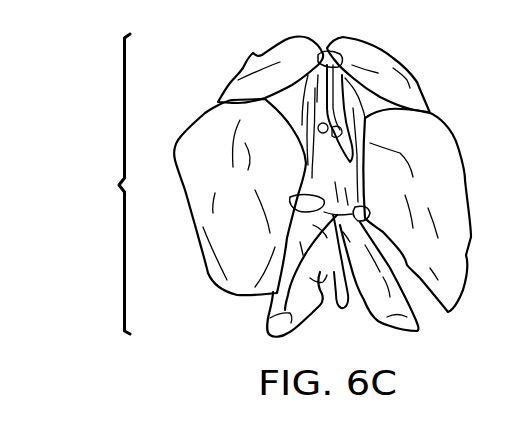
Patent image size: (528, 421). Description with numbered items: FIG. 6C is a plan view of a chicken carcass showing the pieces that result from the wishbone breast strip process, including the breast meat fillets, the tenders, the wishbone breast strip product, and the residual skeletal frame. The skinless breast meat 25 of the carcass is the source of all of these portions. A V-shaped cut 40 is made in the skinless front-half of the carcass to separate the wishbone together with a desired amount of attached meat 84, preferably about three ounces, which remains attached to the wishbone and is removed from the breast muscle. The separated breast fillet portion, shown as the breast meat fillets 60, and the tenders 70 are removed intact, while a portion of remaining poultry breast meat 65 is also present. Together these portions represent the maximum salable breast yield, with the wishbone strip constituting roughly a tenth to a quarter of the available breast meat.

The breast meat 25 is at (106, 184).
The V-shaped cut 40 is at (195, 225).
The breast meat fillets 60 is at (455, 188).
The remaining poultry breast meat 65 is at (198, 137).
The tenders 70 is at (373, 60).
The attached meat 84 is at (270, 310).